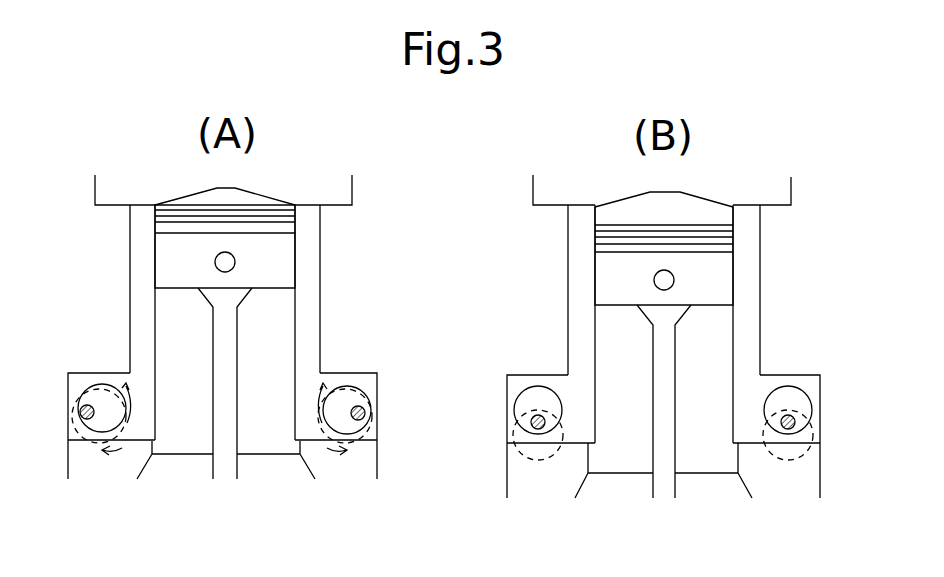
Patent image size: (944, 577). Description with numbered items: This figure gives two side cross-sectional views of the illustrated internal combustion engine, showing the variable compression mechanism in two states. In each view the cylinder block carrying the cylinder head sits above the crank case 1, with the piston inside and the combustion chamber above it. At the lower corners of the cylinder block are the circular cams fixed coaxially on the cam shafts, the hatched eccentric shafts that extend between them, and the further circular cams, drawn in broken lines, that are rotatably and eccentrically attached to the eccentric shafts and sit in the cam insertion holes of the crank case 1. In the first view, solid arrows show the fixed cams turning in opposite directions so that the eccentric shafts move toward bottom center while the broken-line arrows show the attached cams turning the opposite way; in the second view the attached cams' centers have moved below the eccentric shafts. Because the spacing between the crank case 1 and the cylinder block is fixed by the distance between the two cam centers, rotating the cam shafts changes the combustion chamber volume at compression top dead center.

The crank case 1 is at (365, 470).